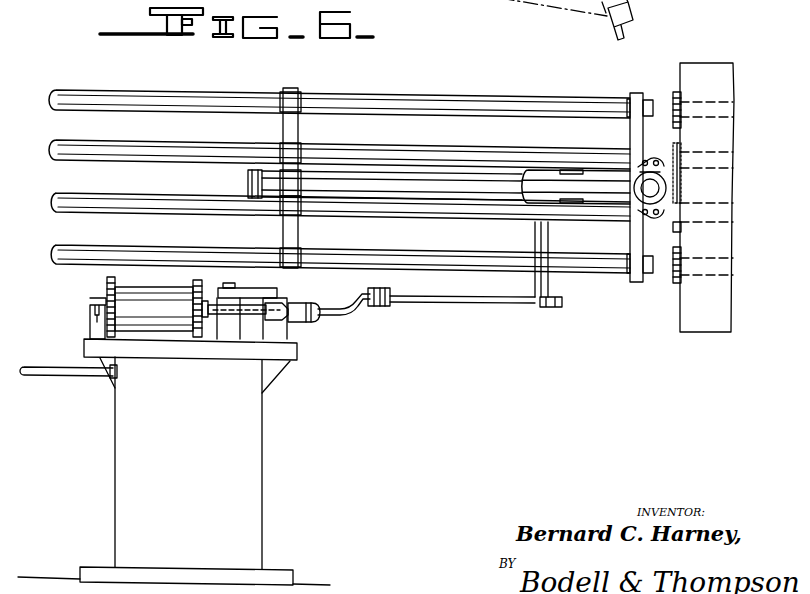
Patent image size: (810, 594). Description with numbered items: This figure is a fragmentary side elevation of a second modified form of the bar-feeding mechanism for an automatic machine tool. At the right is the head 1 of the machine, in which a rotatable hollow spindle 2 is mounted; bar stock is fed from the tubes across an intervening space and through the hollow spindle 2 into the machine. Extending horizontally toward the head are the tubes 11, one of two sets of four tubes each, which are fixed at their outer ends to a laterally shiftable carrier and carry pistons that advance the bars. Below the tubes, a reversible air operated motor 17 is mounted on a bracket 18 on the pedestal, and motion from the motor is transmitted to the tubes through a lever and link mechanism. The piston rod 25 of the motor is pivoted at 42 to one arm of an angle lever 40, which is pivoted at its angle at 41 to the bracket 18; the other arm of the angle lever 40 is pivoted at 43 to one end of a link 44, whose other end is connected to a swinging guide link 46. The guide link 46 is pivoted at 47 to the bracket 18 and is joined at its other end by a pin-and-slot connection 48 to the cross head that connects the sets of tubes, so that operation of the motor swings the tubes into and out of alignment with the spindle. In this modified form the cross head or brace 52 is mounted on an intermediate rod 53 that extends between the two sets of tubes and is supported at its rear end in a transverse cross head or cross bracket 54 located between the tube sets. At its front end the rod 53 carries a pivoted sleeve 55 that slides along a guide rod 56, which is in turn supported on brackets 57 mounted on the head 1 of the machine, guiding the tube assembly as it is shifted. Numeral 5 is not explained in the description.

The head 1 is at (700, 72).
The rotatable hollow spindle 2 is at (700, 117).
The supporting blocks 5 is at (666, 91).
The tubes 11 is at (132, 146).
The reversible air operated motor 17 is at (136, 295).
The bracket 18 is at (85, 346).
The piston rod 25 is at (216, 303).
The angle lever 40 is at (337, 313).
The pivot 41 is at (278, 302).
The pivot 42 is at (308, 324).
The pivot 43 is at (382, 307).
The link 44 is at (391, 293).
The swinging guide link 46 is at (455, 298).
The pivot 47 is at (232, 294).
The pin-and-slot connection 48 is at (545, 304).
The cross head or brace 52 is at (632, 133).
The rod 53 is at (381, 180).
The transverse cross head or cross bracket 54 is at (248, 190).
The pivoted sleeve 55 is at (661, 183).
The guide rod 56 is at (658, 193).
The brackets 57 is at (670, 167).